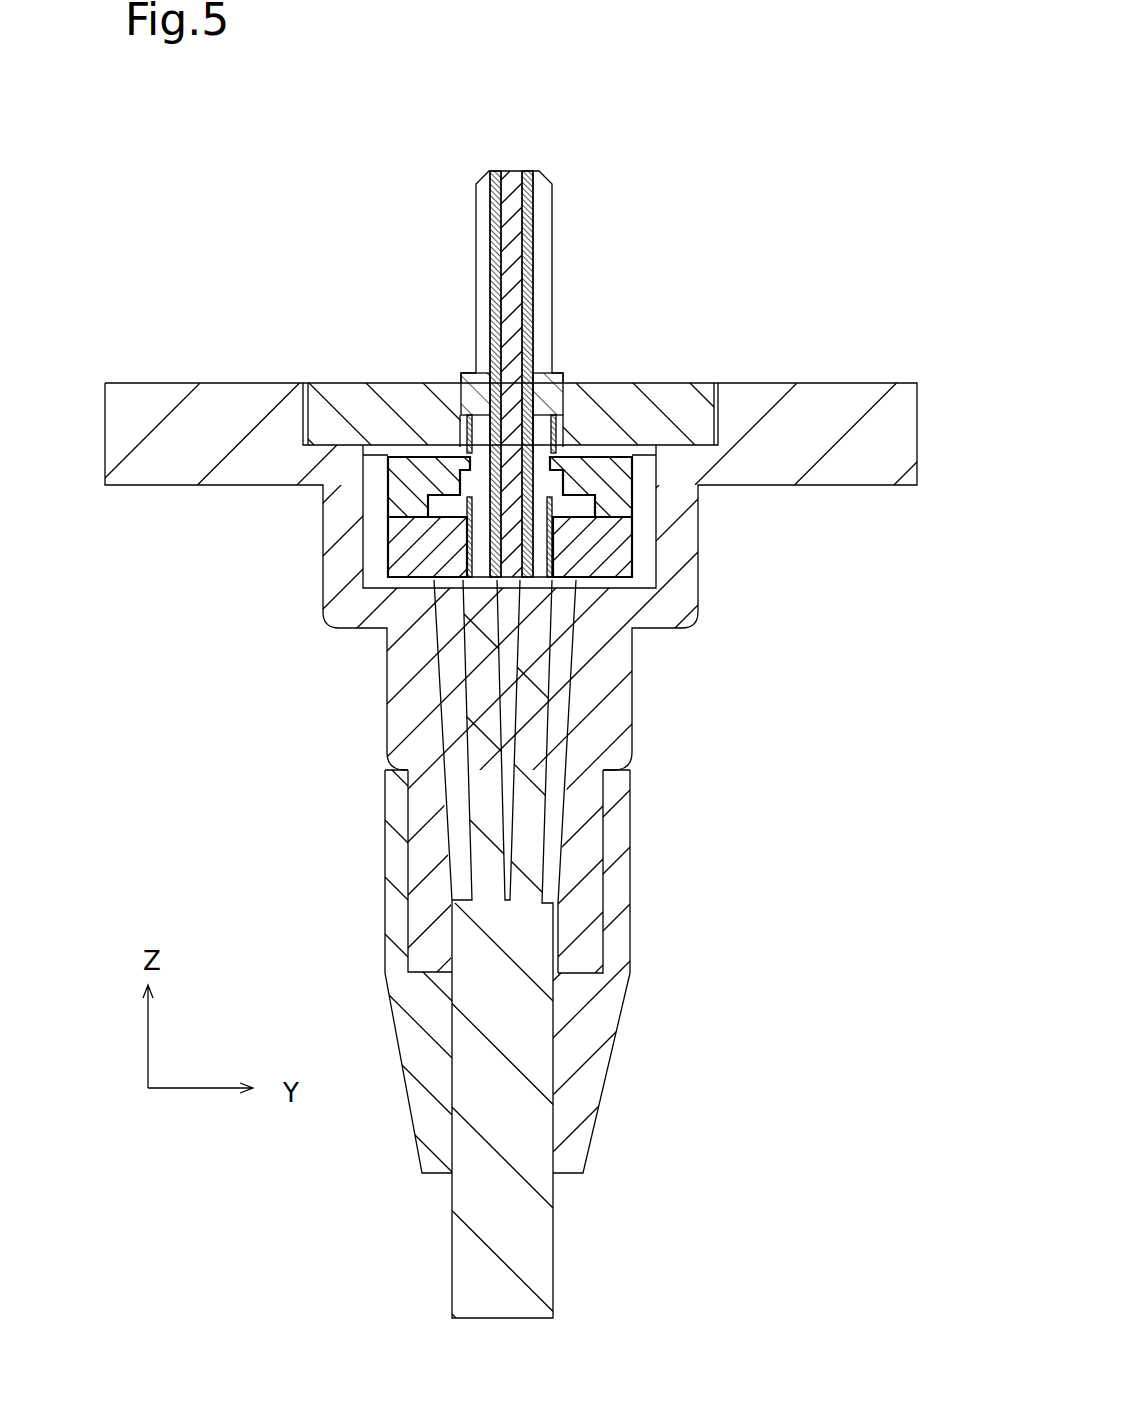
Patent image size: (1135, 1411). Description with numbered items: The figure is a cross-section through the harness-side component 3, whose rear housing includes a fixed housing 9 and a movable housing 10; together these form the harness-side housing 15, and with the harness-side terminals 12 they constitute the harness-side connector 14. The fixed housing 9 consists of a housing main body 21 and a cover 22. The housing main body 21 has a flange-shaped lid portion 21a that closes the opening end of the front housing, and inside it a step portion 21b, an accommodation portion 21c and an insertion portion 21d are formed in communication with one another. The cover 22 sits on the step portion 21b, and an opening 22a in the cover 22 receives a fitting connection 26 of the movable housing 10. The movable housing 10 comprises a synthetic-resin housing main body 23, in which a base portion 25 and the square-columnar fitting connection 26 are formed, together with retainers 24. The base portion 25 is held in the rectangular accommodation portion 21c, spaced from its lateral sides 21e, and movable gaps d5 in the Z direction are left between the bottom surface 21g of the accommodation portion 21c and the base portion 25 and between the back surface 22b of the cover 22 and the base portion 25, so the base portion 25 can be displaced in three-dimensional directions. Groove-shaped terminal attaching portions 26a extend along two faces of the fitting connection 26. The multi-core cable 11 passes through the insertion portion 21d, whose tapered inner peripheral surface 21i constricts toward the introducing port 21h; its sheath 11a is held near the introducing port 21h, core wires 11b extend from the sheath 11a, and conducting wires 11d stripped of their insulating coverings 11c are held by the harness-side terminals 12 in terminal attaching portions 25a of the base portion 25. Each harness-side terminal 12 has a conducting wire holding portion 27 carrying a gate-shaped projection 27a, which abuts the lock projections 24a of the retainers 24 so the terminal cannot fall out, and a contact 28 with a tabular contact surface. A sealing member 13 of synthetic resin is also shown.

The harness-side component 3 is at (766, 180).
The fixed housing 9 is at (881, 383).
The movable housing 10 is at (484, 407).
The multi-core cable 11 is at (459, 995).
The sheath 11a is at (458, 1237).
The core wires 11b is at (510, 797).
The insulating coverings 11c is at (468, 815).
The conducting wires 11d is at (437, 598).
The harness-side terminals 12 is at (505, 349).
The sealing member 13 is at (607, 1079).
The harness-side connector 14 is at (511, 170).
The harness-side housing 15 is at (561, 711).
The housing main body 21 is at (561, 711).
The lid portion 21a is at (832, 383).
The step portion 21b is at (709, 385).
The accommodation portion 21c is at (643, 553).
The insertion portion 21d is at (557, 847).
The lateral sides 21e is at (648, 587).
The bottom surface 21g is at (606, 588).
The introducing port 21h is at (533, 972).
The tapered inner peripheral surface 21i is at (555, 785).
The cover 22 is at (499, 397).
The opening 22a is at (452, 383).
The back surface 22b is at (640, 400).
The housing main body 23 is at (484, 407).
The retainers 24 is at (504, 466).
The lock projections 24a is at (333, 405).
The base portion 25 is at (390, 567).
The terminal attaching portions 25a is at (557, 588).
The fitting connection 26 is at (563, 344).
The terminal attaching portions 26a is at (488, 226).
The conducting wire holding portion 27 is at (505, 425).
The projection 27a is at (462, 383).
The contact 28 is at (490, 200).
The movable gaps d5 is at (420, 450).